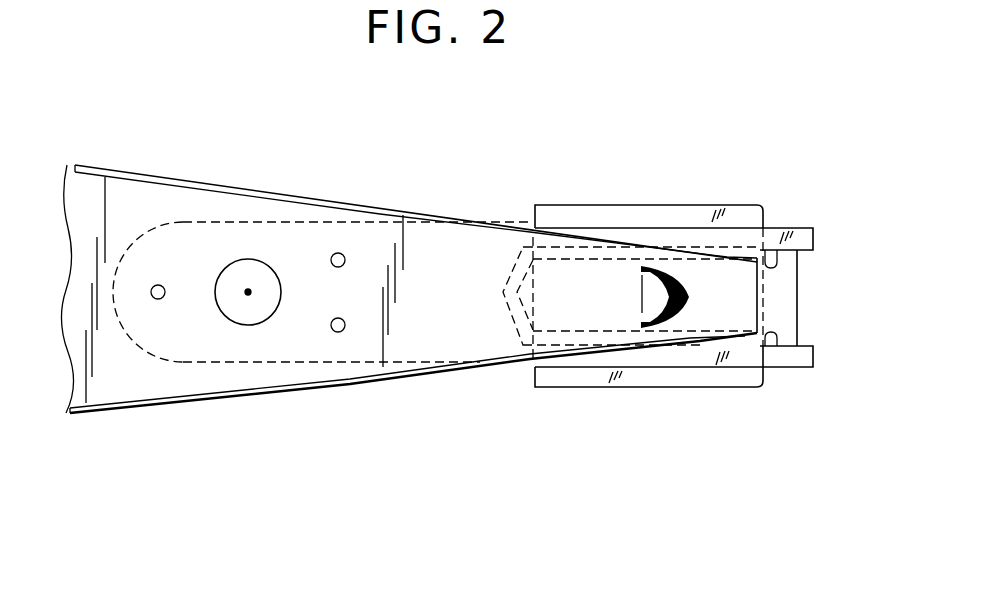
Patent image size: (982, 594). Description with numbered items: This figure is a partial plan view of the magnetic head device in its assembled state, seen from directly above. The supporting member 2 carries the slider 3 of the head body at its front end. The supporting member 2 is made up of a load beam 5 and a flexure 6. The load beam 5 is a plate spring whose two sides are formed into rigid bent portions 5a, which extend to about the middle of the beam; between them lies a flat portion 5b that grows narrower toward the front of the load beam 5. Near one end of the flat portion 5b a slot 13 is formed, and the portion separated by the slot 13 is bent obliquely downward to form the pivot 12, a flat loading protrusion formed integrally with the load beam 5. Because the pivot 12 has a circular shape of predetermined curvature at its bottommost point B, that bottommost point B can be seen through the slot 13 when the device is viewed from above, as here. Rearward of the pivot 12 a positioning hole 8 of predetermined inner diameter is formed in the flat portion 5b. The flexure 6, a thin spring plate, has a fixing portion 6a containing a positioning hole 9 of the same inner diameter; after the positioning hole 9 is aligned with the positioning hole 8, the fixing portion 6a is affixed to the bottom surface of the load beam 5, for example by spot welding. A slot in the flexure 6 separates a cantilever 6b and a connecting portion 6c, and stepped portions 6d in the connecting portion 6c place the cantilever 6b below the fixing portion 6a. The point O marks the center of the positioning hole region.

The supporting member 2 is at (378, 386).
The slider 3 is at (727, 383).
The load beam 5 is at (409, 272).
The bent portions 5a is at (197, 182).
The flat portion 5b is at (272, 212).
The flexure 6 is at (480, 320).
The fixing portion 6a is at (427, 333).
The cantilever 6b is at (572, 347).
The connecting portion 6c is at (783, 277).
The stepped portions 6d is at (812, 250).
The positioning hole 8 is at (248, 292).
The positioning hole 9 is at (229, 376).
The pivot 12 is at (644, 266).
The slot 13 is at (688, 297).
The bottommost point B is at (670, 298).
The pivot center O is at (243, 313).